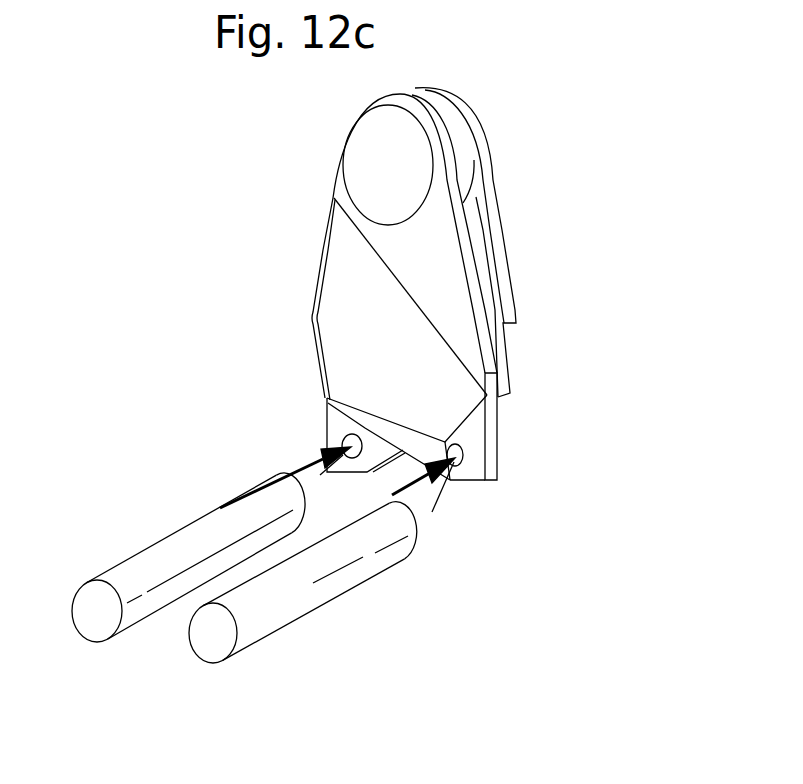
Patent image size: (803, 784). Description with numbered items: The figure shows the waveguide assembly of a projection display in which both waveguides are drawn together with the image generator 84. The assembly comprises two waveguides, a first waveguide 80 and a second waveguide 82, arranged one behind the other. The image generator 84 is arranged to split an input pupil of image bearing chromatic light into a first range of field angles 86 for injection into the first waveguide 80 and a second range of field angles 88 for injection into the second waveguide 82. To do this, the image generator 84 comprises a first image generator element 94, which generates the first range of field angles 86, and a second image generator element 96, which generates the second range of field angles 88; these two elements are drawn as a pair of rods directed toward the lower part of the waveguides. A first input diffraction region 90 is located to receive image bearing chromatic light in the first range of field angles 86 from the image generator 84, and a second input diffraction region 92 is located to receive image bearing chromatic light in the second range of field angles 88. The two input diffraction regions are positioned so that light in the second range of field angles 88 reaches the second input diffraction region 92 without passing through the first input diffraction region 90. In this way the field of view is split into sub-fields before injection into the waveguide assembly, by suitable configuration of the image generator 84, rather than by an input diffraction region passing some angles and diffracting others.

The first waveguide 80 is at (332, 194).
The second waveguide 82 is at (495, 224).
The image generator 84 is at (166, 493).
The first range of field angles 86 is at (405, 484).
The second range of field angles 88 is at (285, 462).
The first input diffraction region 90 is at (460, 450).
The second input diffraction region 92 is at (332, 436).
The first image generator element 94 is at (312, 592).
The second image generator element 96 is at (118, 578).